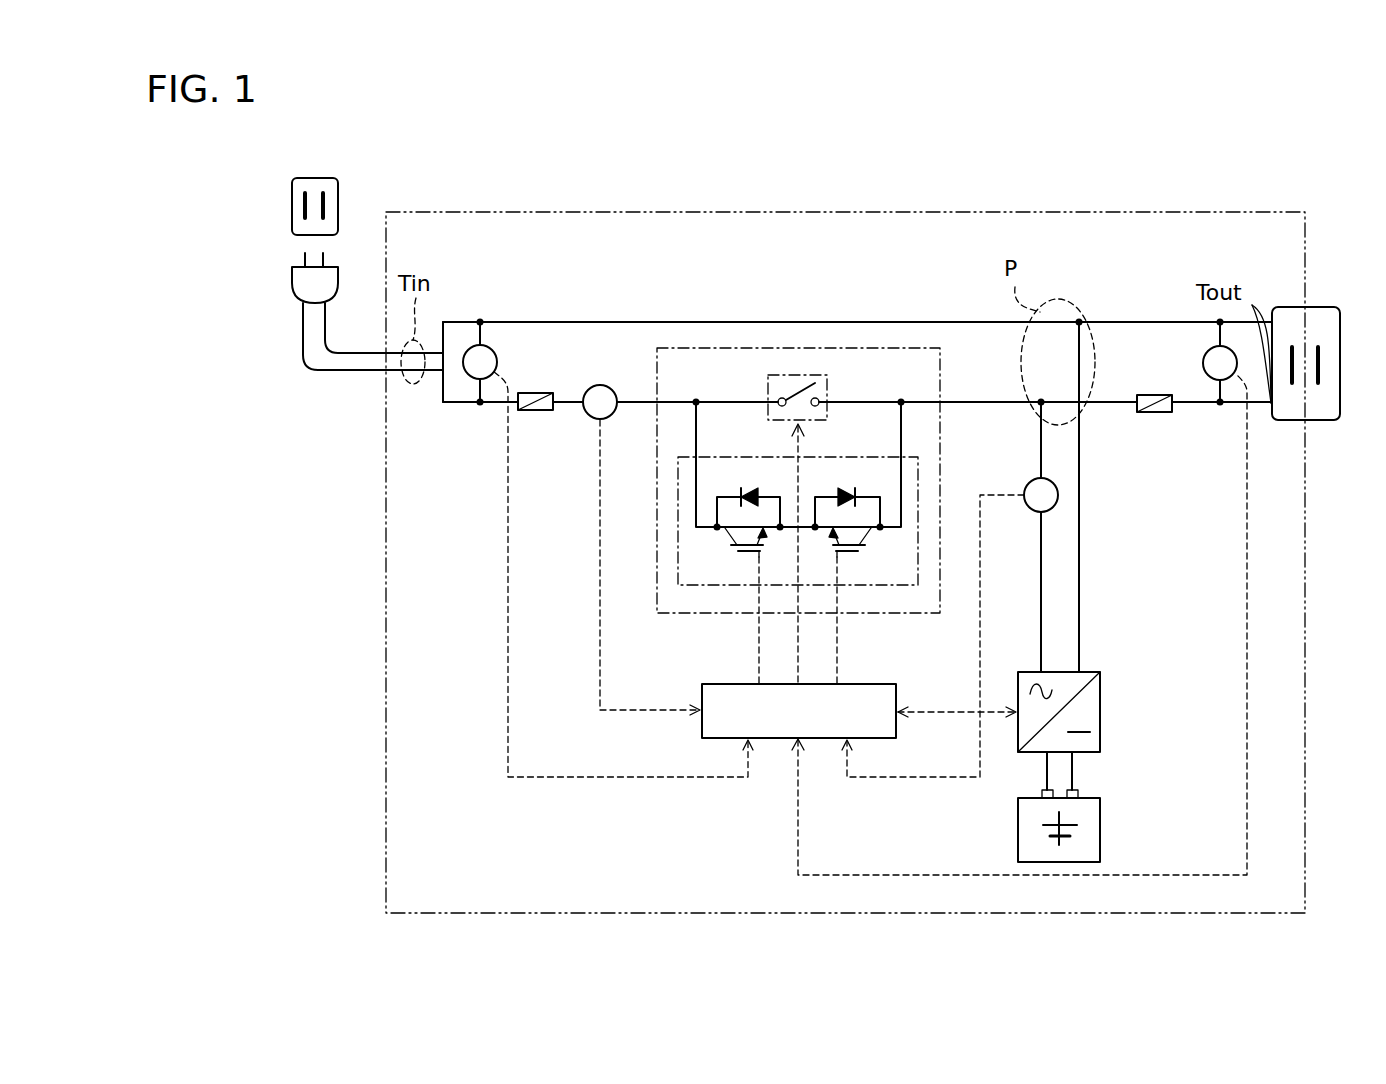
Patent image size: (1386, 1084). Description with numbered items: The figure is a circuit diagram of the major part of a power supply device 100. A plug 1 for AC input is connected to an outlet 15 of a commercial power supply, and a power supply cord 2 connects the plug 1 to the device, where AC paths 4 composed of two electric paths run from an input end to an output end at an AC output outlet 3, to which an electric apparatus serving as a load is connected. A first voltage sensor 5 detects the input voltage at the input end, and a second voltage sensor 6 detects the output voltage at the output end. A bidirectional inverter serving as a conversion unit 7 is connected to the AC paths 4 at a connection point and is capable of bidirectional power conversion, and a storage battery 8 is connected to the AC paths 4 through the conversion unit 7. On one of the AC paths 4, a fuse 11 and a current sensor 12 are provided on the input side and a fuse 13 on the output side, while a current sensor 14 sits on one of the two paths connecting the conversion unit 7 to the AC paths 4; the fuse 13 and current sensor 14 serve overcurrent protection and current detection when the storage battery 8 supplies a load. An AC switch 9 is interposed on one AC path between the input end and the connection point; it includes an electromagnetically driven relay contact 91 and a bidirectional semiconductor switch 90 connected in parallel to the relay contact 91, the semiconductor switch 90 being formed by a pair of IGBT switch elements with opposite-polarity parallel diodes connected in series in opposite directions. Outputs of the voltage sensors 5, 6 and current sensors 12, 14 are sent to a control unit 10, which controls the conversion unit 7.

The plug 1 is at (303, 305).
The power supply cord 2 is at (351, 355).
The AC output outlet 3 is at (1291, 307).
The AC paths 4 is at (863, 312).
The first voltage sensor 5 is at (476, 380).
The second voltage sensor 6 is at (1212, 381).
The conversion unit 7 is at (1102, 710).
The storage battery 8 is at (1102, 830).
The AC switch 9 is at (675, 614).
The control unit 10 is at (773, 740).
The fuse 11 is at (535, 412).
The current sensor 12 is at (600, 385).
The fuse 13 is at (1155, 414).
The current sensor 14 is at (1028, 482).
The outlet 15 is at (318, 178).
The bidirectional semiconductor switch 90 is at (720, 586).
The relay contact 91 is at (830, 387).
The power supply device 100 is at (873, 182).